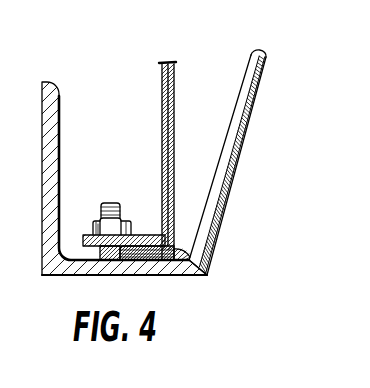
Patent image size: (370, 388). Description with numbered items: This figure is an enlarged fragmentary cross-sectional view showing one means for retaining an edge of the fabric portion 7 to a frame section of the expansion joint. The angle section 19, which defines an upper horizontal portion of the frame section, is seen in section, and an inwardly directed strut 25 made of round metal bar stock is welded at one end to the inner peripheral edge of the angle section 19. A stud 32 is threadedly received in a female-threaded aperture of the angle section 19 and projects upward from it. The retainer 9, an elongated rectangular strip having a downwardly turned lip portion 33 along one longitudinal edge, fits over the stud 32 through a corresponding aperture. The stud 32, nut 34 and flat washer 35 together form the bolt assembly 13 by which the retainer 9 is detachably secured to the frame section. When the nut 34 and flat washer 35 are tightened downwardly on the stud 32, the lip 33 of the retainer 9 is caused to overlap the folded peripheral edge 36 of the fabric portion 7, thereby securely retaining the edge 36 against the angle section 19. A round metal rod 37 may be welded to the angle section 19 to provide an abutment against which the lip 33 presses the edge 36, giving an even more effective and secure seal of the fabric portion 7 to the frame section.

The fabric portion 7 is at (182, 84).
The first retainer strip 9 is at (144, 246).
The bolt assembly 13 is at (83, 176).
The angle section 19 is at (58, 114).
The strut 25 is at (250, 108).
The stud 32 is at (106, 204).
The lip portion 33 is at (178, 246).
The nut 34 is at (95, 222).
The flat washer 35 is at (84, 240).
The folded peripheral edge 36 is at (149, 266).
The round metal rod 37 is at (186, 268).